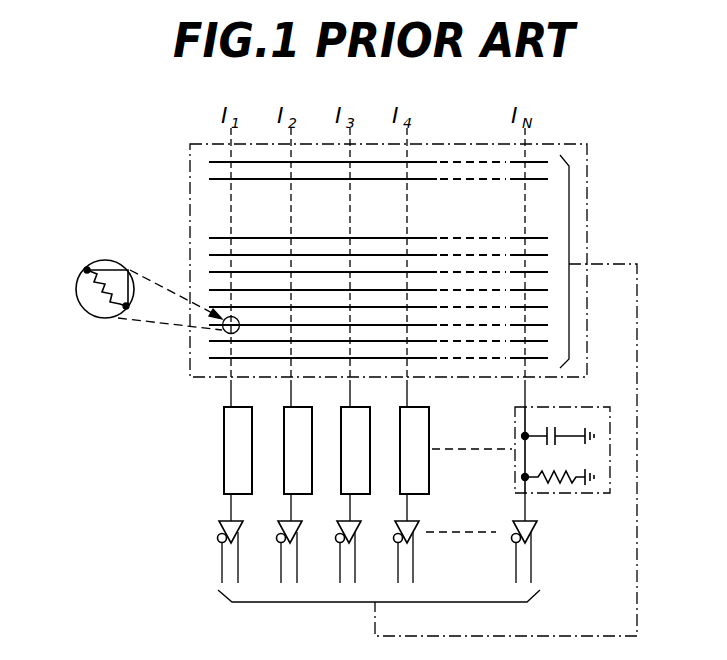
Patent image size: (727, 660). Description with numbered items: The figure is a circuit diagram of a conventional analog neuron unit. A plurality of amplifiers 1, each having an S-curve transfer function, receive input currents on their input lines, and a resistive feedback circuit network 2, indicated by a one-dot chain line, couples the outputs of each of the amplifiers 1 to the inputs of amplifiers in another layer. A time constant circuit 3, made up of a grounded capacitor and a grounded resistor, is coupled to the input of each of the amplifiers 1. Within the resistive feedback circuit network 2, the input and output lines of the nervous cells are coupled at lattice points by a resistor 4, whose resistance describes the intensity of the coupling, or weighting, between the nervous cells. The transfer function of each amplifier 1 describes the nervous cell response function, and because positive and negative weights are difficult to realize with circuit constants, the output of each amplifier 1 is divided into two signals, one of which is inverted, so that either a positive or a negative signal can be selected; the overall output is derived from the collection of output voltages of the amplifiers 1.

The amplifier 1 is at (280, 527).
The resistive feedback circuit network 2 is at (190, 207).
The time constant circuit 3 is at (224, 435).
The resistor 4 is at (95, 299).